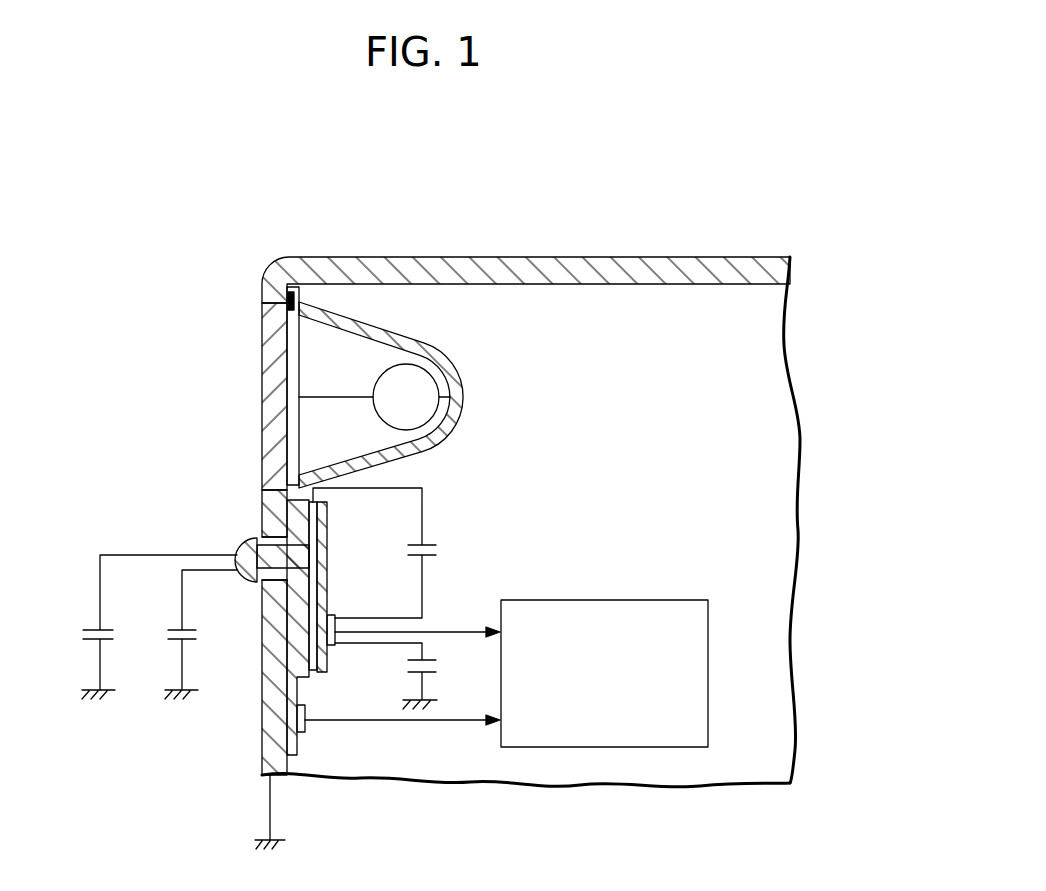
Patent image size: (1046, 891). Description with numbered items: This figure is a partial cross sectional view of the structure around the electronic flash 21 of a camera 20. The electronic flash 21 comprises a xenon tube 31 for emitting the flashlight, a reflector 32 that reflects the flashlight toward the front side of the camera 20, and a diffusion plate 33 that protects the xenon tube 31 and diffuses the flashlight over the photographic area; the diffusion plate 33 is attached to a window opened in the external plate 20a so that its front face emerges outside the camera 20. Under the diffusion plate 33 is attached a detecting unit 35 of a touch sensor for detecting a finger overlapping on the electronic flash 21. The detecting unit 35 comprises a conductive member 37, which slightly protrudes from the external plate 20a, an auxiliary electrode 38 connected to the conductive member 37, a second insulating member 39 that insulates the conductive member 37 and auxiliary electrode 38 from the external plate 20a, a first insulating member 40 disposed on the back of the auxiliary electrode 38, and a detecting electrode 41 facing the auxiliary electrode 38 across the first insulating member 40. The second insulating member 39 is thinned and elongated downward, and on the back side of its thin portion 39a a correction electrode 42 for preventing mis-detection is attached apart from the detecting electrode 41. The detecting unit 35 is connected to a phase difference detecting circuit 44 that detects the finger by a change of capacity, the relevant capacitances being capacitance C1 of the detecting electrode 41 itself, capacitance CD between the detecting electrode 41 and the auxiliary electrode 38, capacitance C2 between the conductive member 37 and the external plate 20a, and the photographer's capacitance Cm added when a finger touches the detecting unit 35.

The camera 20 is at (531, 467).
The external plate 20a is at (372, 258).
The electronic flash 21 is at (340, 386).
The xenon tube 31 is at (386, 381).
The reflector 32 is at (457, 355).
The diffusion plate 33 is at (263, 320).
The detecting unit 35 is at (281, 598).
The conductive member 37 is at (238, 544).
The auxiliary electrode 38 is at (318, 522).
The second insulating member 39 is at (287, 652).
The thin portion 39a is at (297, 753).
The first insulating member 40 is at (327, 582).
The detecting electrode 41 is at (335, 645).
The correction electrode 42 is at (306, 726).
The phase difference detecting circuit 44 is at (610, 600).
The capacitance CD is at (398, 553).
The capacitance C1 is at (406, 676).
The capacitance C2 is at (201, 634).
The capacitance Cm is at (132, 627).